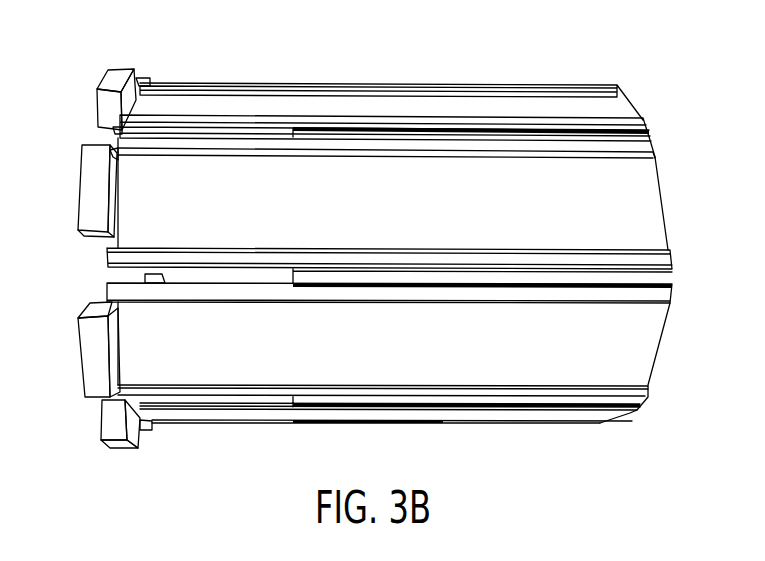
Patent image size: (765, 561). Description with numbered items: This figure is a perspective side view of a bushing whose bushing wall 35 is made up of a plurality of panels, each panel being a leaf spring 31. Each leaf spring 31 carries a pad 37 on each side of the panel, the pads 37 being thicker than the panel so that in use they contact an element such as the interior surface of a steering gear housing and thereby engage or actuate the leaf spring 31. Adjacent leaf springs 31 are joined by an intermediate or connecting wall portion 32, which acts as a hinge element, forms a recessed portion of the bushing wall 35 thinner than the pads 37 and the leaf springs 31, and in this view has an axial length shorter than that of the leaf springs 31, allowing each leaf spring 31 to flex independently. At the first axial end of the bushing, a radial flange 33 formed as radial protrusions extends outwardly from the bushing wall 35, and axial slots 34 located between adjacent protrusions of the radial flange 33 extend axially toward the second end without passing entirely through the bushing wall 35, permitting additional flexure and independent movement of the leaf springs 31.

The leaf spring 31 is at (590, 110).
The intermediate or connecting wall portion 32 is at (653, 272).
The radial flange 33 is at (95, 73).
The axial slot 34 is at (112, 130).
The bushing wall 35 is at (653, 352).
The pad 37 is at (645, 120).